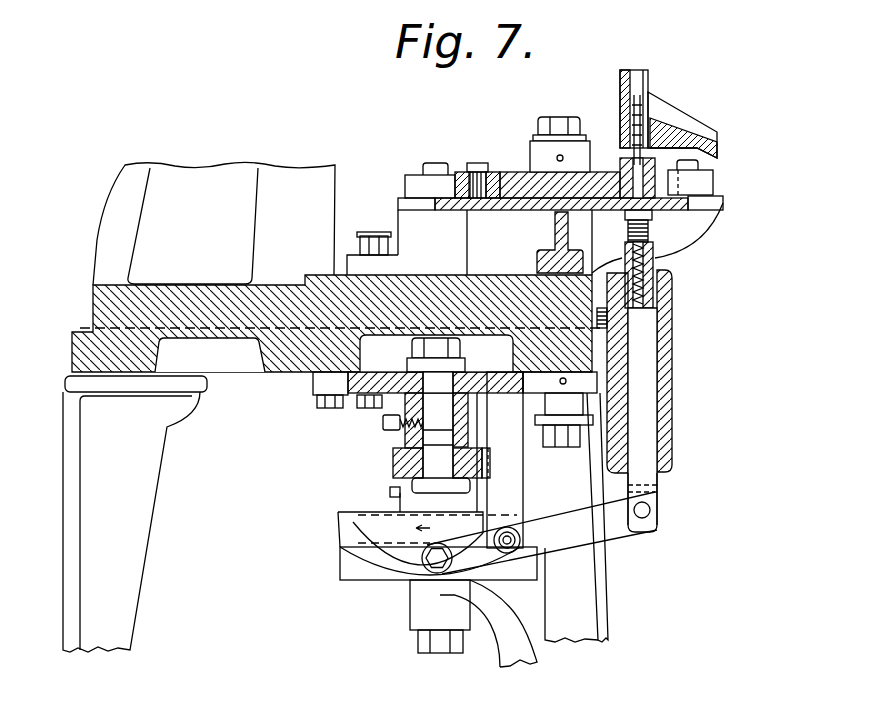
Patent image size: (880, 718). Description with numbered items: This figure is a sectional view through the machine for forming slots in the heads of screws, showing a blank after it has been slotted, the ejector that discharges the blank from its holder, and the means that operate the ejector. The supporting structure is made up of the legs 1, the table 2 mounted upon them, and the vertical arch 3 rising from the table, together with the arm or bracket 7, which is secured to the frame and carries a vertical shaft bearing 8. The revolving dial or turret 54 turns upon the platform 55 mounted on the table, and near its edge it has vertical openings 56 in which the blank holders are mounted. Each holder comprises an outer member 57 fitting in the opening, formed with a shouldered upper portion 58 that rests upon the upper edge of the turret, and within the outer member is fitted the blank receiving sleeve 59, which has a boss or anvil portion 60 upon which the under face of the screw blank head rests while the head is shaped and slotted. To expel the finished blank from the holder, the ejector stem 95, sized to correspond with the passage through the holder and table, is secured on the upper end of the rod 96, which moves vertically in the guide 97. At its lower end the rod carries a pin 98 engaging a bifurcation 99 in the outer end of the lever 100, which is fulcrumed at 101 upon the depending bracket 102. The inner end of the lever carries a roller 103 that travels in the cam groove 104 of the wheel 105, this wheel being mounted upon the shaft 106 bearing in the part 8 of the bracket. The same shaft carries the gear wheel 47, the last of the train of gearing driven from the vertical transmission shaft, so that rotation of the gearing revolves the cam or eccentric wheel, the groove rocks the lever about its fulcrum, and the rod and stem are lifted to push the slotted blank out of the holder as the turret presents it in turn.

The legs 1 is at (128, 618).
The table 2 is at (192, 378).
The vertical arch 3 is at (214, 223).
The arm or bracket 7 is at (517, 668).
The vertical shaft bearing 8 is at (413, 627).
The gear wheel 47 is at (393, 465).
The dial or turret 54 is at (657, 188).
The platform 55 is at (723, 204).
The vertical openings 56 is at (560, 157).
The outer member 57 is at (459, 171).
The shouldered upper portion 58 is at (405, 176).
The blank receiving sleeve 59 is at (506, 160).
The boss or anvil portion 60 is at (430, 163).
The stem 95 is at (662, 212).
The rod 96 is at (637, 337).
The vertical guide 97 is at (672, 365).
The pin 98 is at (650, 510).
The bifurcation 99 is at (655, 530).
The lever 100 is at (607, 550).
The fulcrum 101 is at (535, 551).
The depending bracket 102 is at (508, 483).
The roller 103 is at (428, 566).
The cam groove 104 is at (340, 528).
The wheel 105 is at (363, 512).
The shaft 106 is at (433, 439).